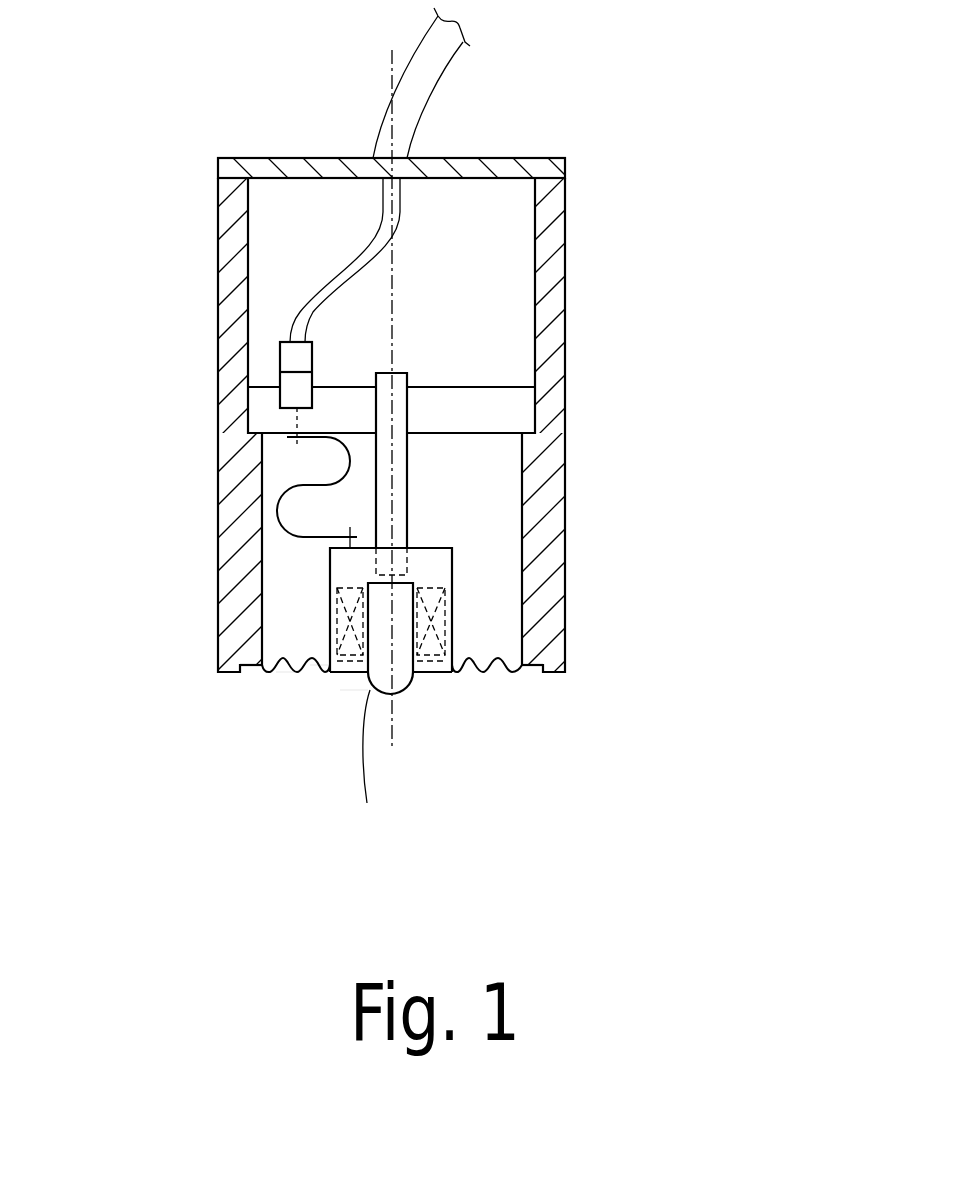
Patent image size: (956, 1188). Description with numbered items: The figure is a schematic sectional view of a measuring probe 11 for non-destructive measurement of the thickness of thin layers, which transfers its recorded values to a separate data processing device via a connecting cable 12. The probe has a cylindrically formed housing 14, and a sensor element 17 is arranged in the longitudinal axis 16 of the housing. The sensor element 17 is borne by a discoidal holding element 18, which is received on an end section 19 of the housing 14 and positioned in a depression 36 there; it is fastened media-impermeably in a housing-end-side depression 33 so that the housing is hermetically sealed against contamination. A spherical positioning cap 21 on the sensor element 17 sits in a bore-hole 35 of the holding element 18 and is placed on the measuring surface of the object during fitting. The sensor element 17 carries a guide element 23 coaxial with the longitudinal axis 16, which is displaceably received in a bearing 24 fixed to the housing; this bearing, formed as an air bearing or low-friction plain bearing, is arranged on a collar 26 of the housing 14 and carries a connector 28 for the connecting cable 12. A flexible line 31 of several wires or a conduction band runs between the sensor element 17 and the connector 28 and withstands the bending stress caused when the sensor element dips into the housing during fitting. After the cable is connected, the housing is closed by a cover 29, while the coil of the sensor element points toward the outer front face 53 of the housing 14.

The measuring probe 11 is at (632, 221).
The connecting cable 12 is at (420, 67).
The housing 14 is at (538, 578).
The longitudinal axis 16 is at (393, 747).
The sensor element 17 is at (471, 627).
The holding element 18 is at (288, 686).
The end section 19 is at (559, 692).
The spherical positioning cap 21 is at (370, 768).
The guide element 23 is at (398, 505).
The bearing 24 is at (513, 415).
The collar 26 is at (540, 446).
The connector 28 is at (293, 395).
The cover 29 is at (300, 172).
The flexible line 31 is at (275, 513).
The depression 33 is at (246, 682).
The bore-hole 35 is at (418, 678).
The depression 36 is at (316, 670).
The outer front face 53 is at (340, 712).